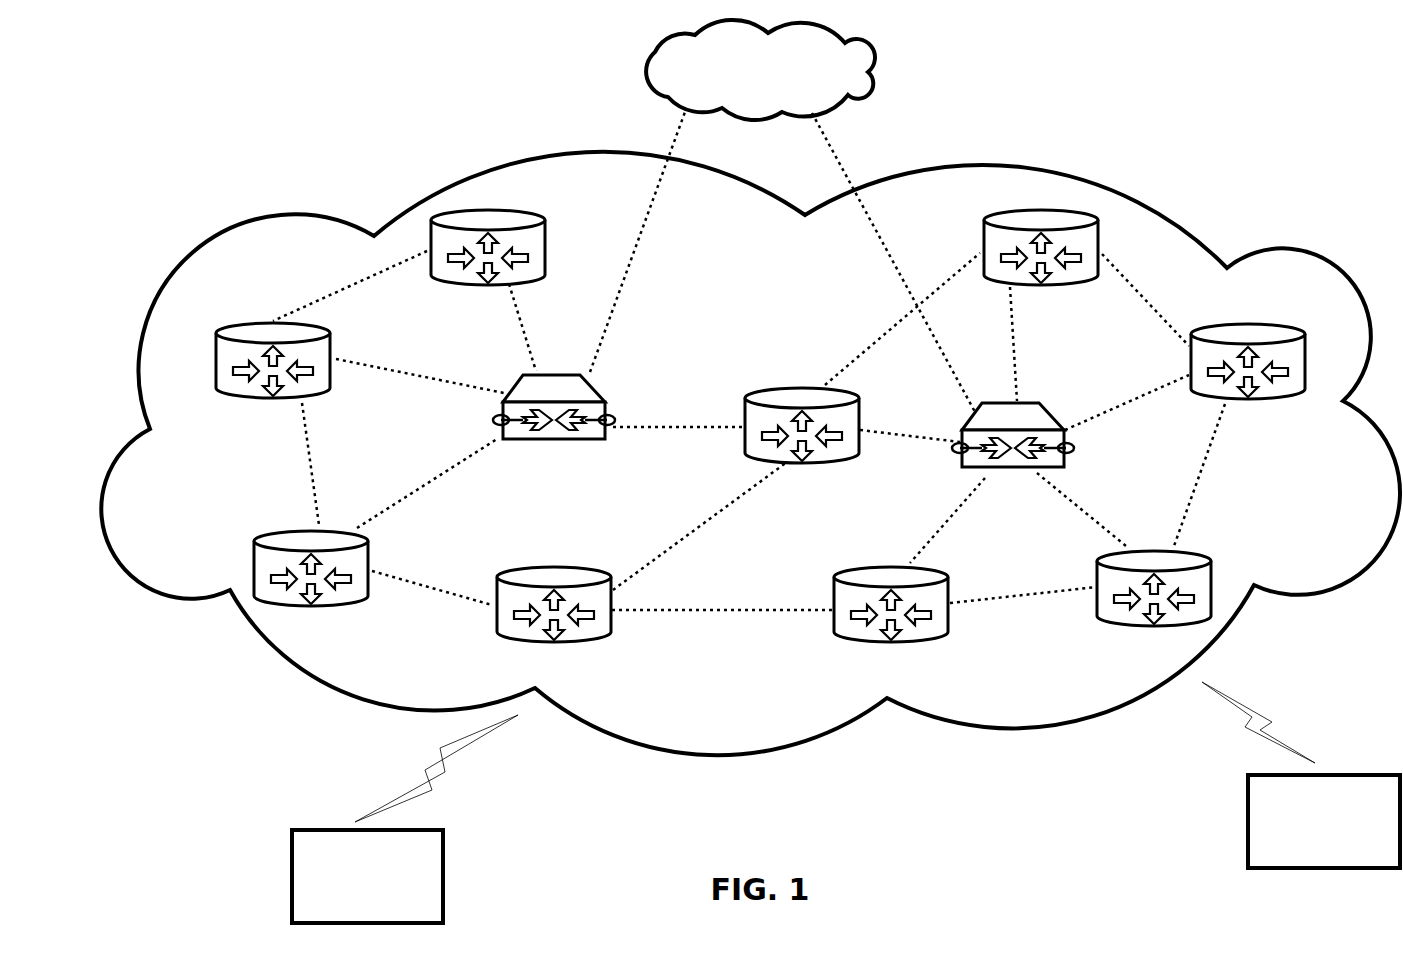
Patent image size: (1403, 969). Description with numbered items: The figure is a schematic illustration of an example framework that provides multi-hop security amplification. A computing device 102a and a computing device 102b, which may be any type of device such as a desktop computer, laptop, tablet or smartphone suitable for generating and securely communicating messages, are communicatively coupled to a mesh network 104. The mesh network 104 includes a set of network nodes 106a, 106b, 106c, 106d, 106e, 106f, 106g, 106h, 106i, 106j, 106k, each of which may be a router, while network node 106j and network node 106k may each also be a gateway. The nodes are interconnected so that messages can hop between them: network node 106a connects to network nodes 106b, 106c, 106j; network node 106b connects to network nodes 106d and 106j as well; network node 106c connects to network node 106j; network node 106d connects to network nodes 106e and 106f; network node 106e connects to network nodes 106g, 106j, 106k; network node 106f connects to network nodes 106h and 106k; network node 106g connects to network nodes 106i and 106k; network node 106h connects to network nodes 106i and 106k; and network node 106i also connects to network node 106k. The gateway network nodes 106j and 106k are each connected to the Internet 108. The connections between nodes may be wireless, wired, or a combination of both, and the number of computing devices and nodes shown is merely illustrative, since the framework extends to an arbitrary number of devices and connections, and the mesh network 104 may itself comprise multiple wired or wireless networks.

The computing device 102a is at (405, 819).
The computing device 102b is at (1301, 775).
The mesh network 104 is at (1276, 276).
The network node 106a is at (273, 379).
The network node 106b is at (311, 586).
The network node 106c is at (488, 265).
The network node 106d is at (554, 623).
The network node 106e is at (802, 443).
The network node 106f is at (891, 623).
The network node 106g is at (1041, 266).
The network node 106h is at (1154, 606).
The network node 106i is at (1248, 380).
The network node 106j is at (554, 429).
The network node 106k is at (1013, 456).
The Internet 108 is at (760, 70).